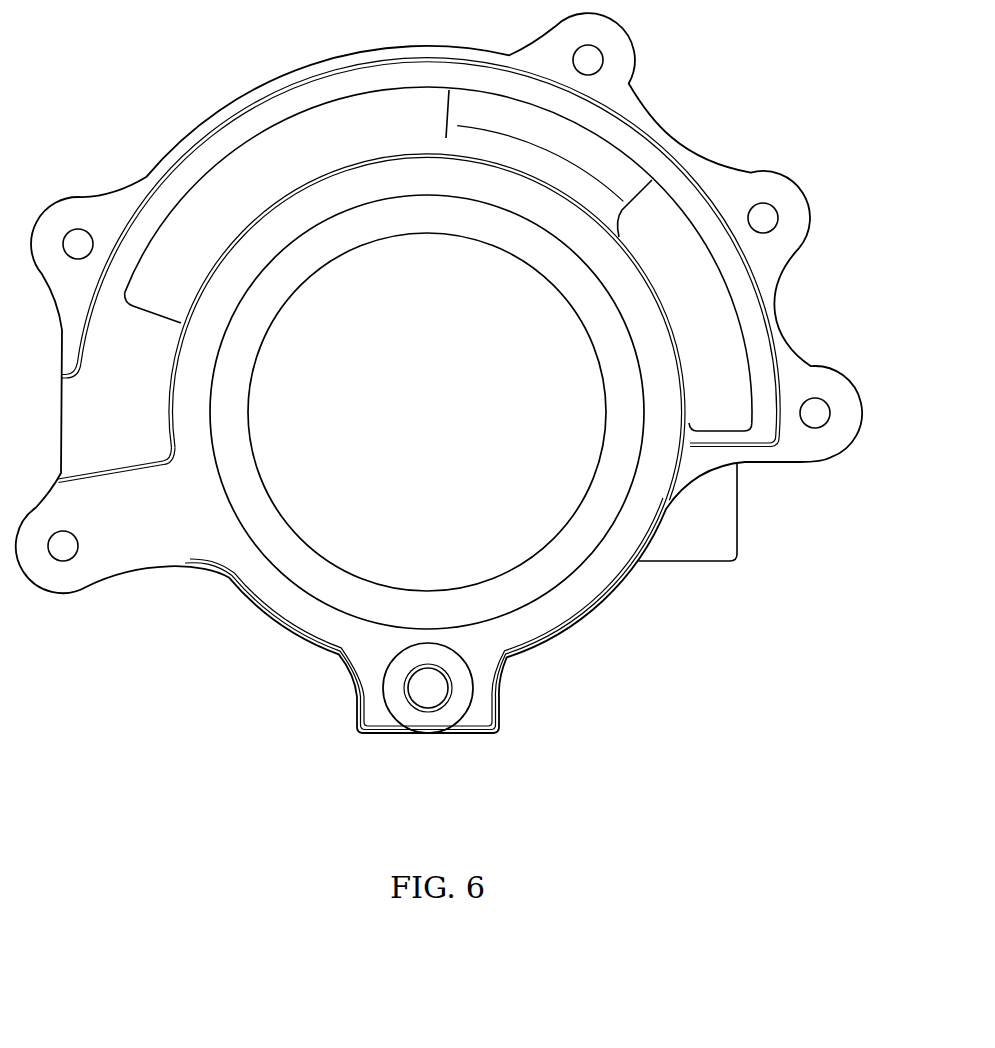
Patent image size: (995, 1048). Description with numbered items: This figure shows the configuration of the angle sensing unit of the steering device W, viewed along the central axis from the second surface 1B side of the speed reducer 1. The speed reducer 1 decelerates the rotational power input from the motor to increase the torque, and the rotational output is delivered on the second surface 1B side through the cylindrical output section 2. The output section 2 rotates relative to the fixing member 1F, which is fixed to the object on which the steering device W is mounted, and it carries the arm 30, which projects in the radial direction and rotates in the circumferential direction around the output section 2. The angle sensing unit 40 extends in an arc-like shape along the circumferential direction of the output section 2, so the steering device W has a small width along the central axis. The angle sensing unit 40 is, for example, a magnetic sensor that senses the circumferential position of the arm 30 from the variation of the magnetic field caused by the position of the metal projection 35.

The speed reducer 1 is at (305, 681).
The fixing member 1F is at (773, 463).
The second surface 1B is at (497, 532).
The output section 2 is at (267, 593).
The arm 30 is at (468, 715).
The metal projection 35 is at (597, 143).
The angle sensing unit 40 is at (723, 318).
The steering device W is at (661, 635).